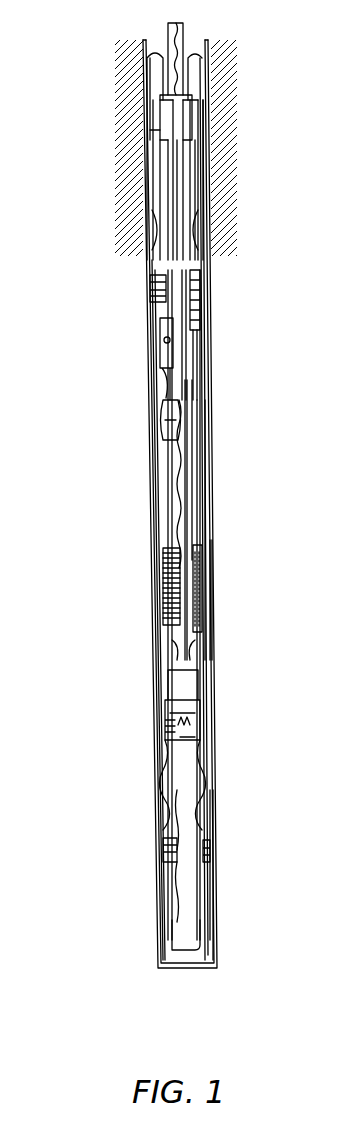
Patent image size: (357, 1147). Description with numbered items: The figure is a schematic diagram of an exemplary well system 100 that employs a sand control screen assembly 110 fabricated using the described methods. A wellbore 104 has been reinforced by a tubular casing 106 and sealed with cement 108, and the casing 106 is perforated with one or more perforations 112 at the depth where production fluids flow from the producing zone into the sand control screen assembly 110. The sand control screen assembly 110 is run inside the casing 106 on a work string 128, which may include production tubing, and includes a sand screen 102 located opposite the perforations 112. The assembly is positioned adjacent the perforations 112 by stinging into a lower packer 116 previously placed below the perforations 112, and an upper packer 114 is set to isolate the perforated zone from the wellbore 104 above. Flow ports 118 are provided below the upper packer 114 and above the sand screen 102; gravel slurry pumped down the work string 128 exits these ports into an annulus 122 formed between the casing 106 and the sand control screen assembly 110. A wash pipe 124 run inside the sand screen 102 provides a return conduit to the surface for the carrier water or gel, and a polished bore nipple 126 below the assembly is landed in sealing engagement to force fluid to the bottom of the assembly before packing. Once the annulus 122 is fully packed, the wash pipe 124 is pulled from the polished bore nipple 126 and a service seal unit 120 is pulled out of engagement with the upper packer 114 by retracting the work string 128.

The well system 100 is at (85, 157).
The sand screen 102 is at (208, 575).
The wellbore 104 is at (207, 133).
The casing 106 is at (207, 172).
The cement 108 is at (143, 93).
The sand control screen assembly 110 is at (198, 450).
The perforations 112 is at (212, 610).
The upper packer 114 is at (152, 285).
The lower packer 116 is at (165, 847).
The flow ports 118 is at (163, 340).
The service seal unit 120 is at (147, 180).
The annulus 122 is at (163, 478).
The wash pipe 124 is at (193, 493).
The polished bore nipple 126 is at (190, 653).
The work string 128 is at (183, 26).